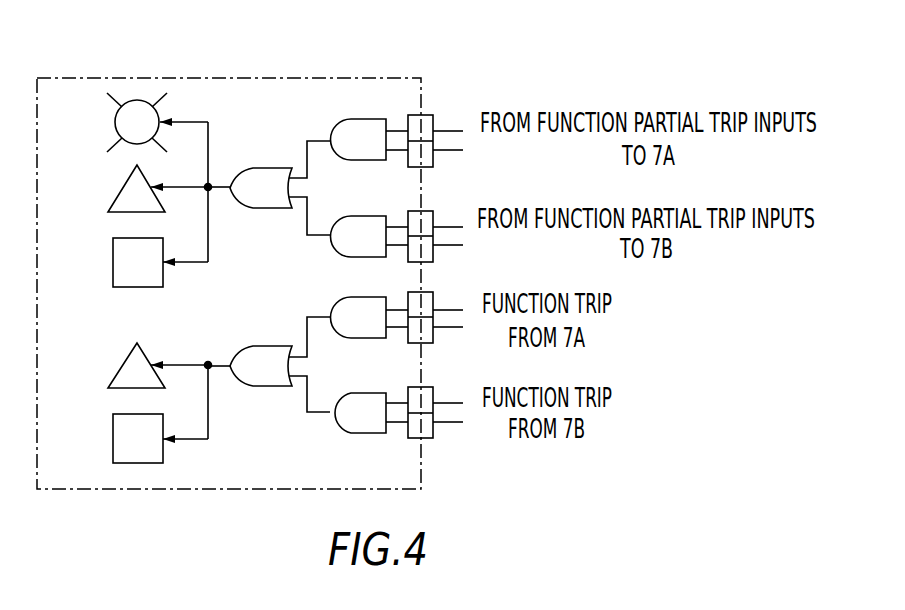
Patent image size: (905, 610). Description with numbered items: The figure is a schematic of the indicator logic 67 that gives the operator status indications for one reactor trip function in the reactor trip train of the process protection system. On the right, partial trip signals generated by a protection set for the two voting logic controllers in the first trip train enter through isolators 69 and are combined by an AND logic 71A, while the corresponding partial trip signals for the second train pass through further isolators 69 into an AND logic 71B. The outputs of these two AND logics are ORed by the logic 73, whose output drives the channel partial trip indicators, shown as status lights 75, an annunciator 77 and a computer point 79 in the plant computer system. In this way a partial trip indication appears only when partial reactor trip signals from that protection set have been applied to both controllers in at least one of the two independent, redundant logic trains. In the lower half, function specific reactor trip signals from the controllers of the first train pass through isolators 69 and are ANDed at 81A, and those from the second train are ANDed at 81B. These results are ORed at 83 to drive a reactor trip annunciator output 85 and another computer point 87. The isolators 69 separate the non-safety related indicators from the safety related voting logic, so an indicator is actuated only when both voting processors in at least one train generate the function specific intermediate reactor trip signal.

The indicator logic 67 is at (273, 60).
The isolators 69 is at (434, 142).
The AND logic 71A is at (353, 119).
The AND logic 71B is at (368, 216).
The OR logic 73 is at (267, 168).
The status lights 75 is at (115, 123).
The annunciator 77 is at (123, 190).
The computer point 79 is at (113, 247).
The AND logic 81A is at (335, 302).
The AND logic 81B is at (337, 433).
The OR logic 83 is at (260, 346).
The reactor trip annunciator output 85 is at (126, 362).
The computer point 87 is at (113, 434).